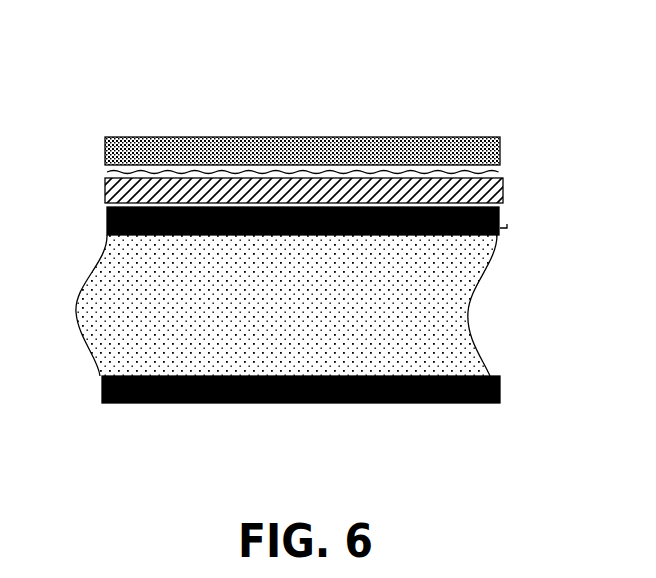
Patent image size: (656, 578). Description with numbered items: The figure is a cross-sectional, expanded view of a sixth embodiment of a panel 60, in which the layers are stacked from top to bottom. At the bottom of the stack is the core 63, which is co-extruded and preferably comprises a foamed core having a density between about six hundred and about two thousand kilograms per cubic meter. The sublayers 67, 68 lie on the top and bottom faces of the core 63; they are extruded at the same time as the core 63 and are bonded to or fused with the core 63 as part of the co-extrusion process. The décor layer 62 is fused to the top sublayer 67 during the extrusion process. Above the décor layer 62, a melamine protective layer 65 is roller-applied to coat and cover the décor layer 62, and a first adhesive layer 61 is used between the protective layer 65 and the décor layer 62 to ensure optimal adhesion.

The panel 60 is at (146, 110).
The first adhesive layer 61 is at (500, 173).
The décor layer 62 is at (493, 195).
The core 63 is at (112, 283).
The melamine protective layer 65 is at (472, 147).
The top sublayer 67 is at (107, 213).
The bottom sublayer 68 is at (490, 376).